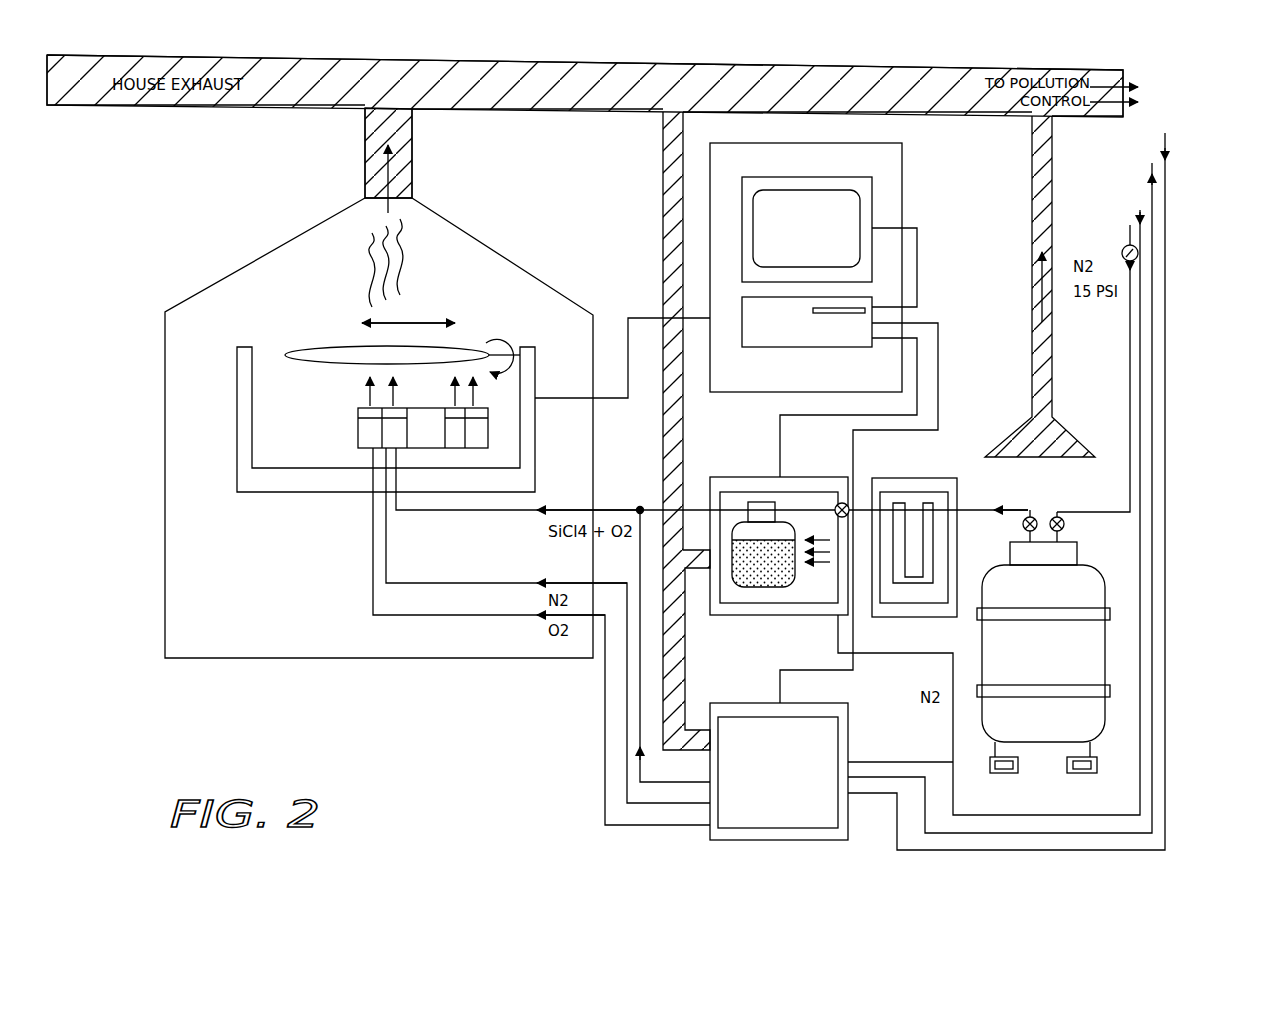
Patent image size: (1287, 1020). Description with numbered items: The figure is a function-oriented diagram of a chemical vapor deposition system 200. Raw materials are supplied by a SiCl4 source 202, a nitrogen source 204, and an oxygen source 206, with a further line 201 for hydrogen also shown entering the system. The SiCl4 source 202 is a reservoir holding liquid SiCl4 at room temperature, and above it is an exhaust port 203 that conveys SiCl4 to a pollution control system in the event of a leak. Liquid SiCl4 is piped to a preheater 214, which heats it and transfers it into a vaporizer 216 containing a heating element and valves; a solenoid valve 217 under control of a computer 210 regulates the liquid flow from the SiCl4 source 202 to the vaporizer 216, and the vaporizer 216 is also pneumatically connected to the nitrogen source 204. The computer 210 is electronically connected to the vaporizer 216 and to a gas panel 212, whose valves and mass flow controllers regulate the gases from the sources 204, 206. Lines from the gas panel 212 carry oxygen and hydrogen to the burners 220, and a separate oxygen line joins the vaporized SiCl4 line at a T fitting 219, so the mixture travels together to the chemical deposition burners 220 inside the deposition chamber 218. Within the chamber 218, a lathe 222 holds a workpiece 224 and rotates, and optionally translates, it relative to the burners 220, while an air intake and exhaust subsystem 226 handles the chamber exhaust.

The chemical vapor deposition system 200 is at (500, 725).
The hydrogen gas line 201 is at (1165, 416).
The SiCl4 source 202 is at (1105, 652).
The exhaust port 203 is at (1032, 358).
The nitrogen (N2) source 204 is at (1140, 303).
The oxygen (O2) source 206 is at (1152, 350).
The computer 210 is at (902, 197).
The gas panel 212 is at (760, 703).
The preheater 214 is at (908, 478).
The vaporizer 216 is at (733, 477).
The solenoid valve 217 is at (841, 503).
The deposition chamber 218 is at (228, 272).
The T fitting 219 is at (640, 507).
The chemical deposition burners 220 is at (358, 433).
The lathe 222 is at (272, 493).
The workpiece 224 is at (330, 345).
The air intake and exhaust subsystem 226 is at (365, 158).